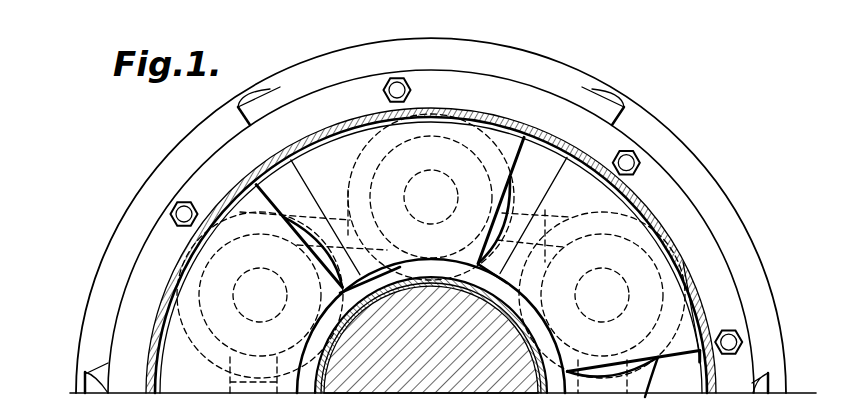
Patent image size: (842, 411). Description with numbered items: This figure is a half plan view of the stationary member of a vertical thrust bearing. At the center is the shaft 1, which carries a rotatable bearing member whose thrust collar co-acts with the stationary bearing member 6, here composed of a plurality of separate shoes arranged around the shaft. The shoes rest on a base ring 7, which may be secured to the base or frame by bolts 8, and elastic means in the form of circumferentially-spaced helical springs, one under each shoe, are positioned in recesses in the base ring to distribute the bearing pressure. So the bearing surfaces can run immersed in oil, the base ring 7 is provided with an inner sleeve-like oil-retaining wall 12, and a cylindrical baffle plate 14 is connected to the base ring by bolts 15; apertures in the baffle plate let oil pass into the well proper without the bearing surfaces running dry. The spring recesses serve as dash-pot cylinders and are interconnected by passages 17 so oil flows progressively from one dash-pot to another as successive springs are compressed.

The shaft 1 is at (548, 410).
The stationary bearing member 6 is at (322, 181).
The base ring 7 is at (713, 198).
The bolts 8 is at (602, 108).
The inner sleeve-like oil-retaining wall 12 is at (540, 348).
The cylindrical baffle plate 14 is at (683, 262).
The bolts 15 is at (395, 77).
The passages 17 is at (463, 243).